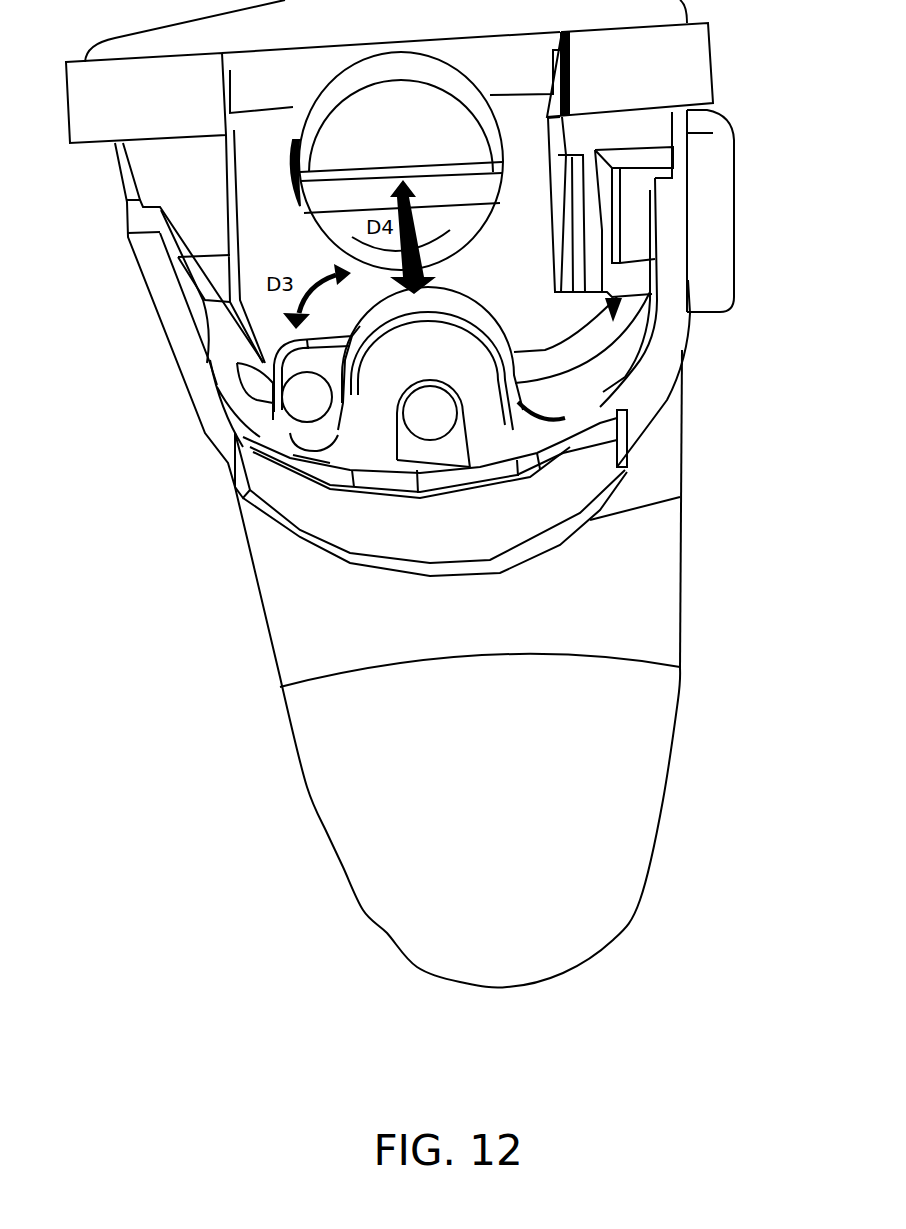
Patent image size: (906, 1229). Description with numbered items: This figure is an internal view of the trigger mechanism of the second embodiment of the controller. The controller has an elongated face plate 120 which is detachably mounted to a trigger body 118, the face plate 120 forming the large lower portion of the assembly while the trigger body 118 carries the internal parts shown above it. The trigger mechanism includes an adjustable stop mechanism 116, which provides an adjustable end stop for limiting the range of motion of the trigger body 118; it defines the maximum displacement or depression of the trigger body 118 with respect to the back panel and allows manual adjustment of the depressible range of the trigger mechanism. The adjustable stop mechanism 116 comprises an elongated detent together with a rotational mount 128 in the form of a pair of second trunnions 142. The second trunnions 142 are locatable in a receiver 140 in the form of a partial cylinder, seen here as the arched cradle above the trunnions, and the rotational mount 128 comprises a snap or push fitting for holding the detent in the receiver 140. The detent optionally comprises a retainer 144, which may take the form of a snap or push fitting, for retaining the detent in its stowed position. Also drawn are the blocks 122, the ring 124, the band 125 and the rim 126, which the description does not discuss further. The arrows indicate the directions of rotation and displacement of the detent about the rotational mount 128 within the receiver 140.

The adjustable stop mechanism 116 is at (292, 377).
The trigger body 118 is at (660, 340).
The face plate 120 is at (476, 817).
The mounting block 122 is at (121, 112).
The ring 124 is at (376, 134).
The band 125 is at (443, 200).
The rim flange 126 is at (464, 533).
The rotational mount 128 is at (445, 400).
The receiver 140 is at (409, 365).
The second trunnions 142 is at (411, 425).
The retainer 144 is at (287, 420).